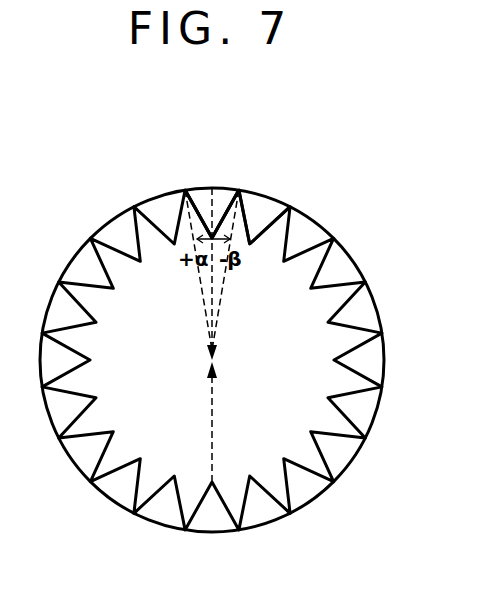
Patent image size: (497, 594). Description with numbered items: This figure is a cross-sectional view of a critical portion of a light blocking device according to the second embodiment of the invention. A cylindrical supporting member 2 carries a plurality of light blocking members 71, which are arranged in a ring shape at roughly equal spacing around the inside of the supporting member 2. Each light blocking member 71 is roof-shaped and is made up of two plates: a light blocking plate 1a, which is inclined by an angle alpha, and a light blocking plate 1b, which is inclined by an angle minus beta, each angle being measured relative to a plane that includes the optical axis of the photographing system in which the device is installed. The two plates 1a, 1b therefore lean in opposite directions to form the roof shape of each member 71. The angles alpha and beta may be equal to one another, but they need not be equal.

The light blocking member 71 is at (160, 131).
The light blocking plate 1a is at (193, 187).
The light blocking plate 1b is at (225, 187).
The supporting member 2 is at (383, 305).